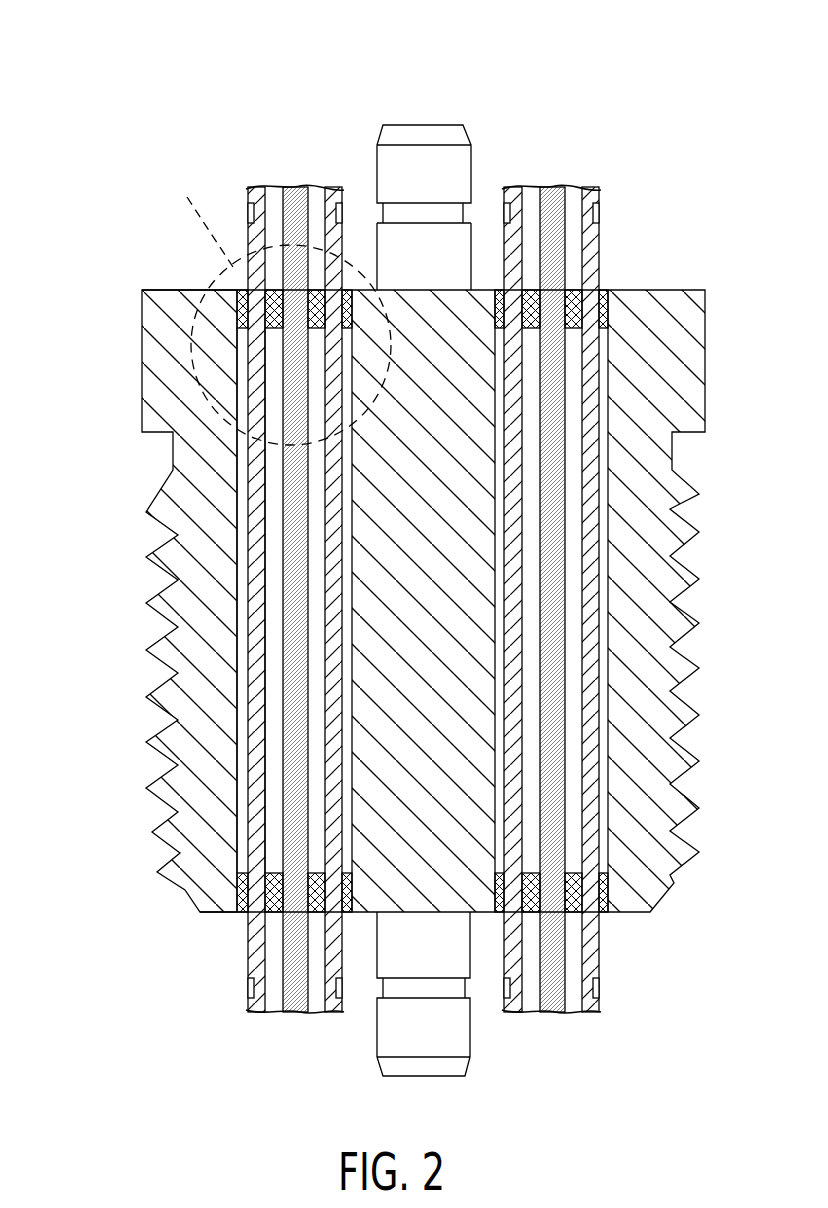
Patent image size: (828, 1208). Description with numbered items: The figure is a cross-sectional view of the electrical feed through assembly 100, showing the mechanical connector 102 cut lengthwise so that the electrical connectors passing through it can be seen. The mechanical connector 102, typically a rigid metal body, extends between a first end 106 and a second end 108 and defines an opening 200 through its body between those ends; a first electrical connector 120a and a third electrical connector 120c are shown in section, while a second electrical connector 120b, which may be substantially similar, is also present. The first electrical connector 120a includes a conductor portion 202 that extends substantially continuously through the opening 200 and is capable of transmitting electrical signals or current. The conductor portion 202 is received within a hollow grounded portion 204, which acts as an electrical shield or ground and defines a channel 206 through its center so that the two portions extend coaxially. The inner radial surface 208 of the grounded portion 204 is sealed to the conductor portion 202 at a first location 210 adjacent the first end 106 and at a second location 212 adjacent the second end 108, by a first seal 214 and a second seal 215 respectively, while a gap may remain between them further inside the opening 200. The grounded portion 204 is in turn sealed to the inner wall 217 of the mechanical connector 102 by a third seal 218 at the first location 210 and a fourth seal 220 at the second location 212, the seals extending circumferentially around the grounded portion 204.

The electrical feed through assembly 100 is at (136, 78).
The mechanical connector 102 is at (687, 313).
The first end 106 is at (160, 288).
The second end 108 is at (212, 913).
The first electrical connector 120a is at (231, 583).
The second electrical connector 120b is at (425, 125).
The third electrical connector 120c is at (600, 258).
The opening 200 is at (238, 690).
The conductor portion 202 is at (292, 568).
The grounded portion 204 is at (258, 603).
The channel 206 is at (268, 634).
The inner radial surface 208 is at (267, 740).
The first location 210 is at (172, 257).
The second location 212 is at (218, 956).
The first seal 214 is at (313, 288).
The second seal 215 is at (317, 913).
The inner wall 217 is at (238, 457).
The third seal 218 is at (245, 287).
The fourth seal 220 is at (245, 912).